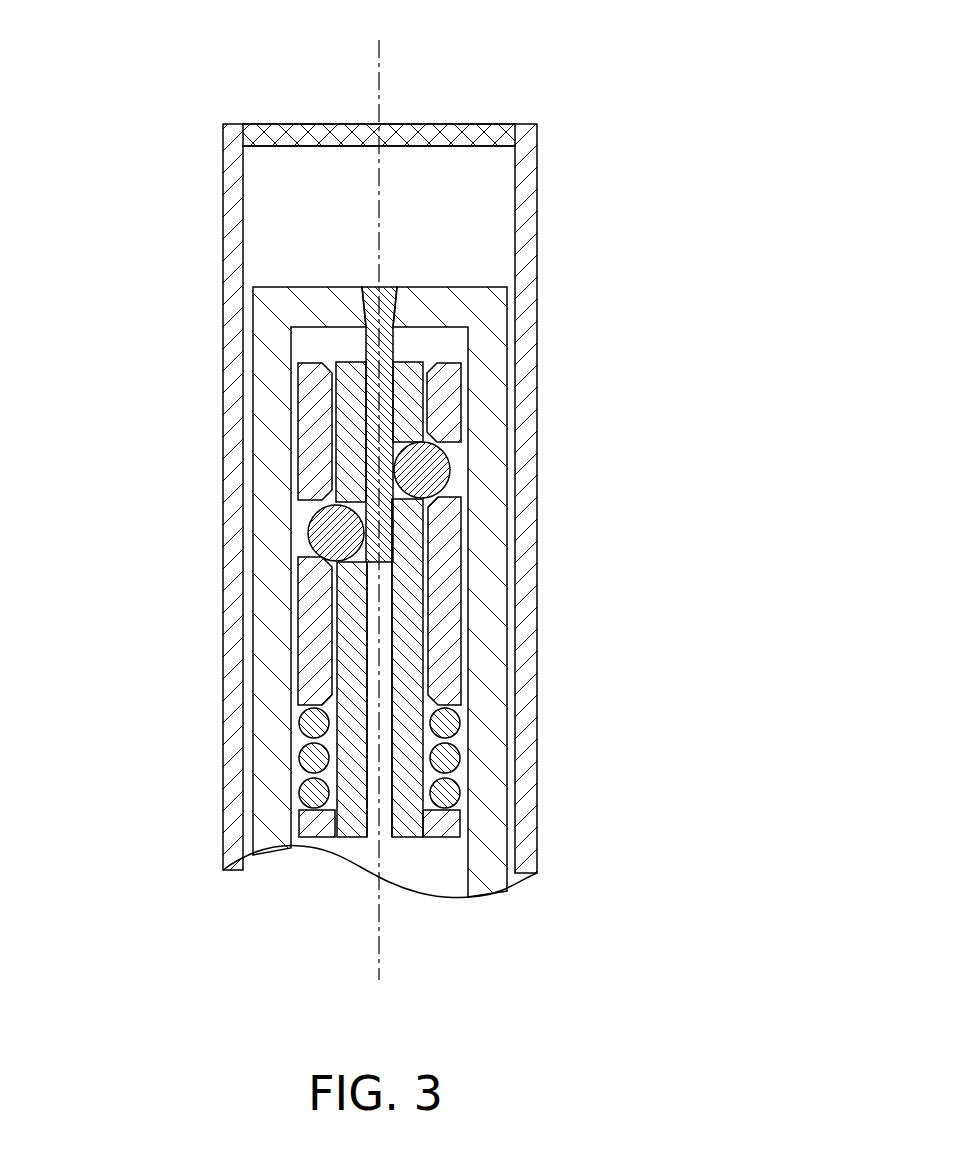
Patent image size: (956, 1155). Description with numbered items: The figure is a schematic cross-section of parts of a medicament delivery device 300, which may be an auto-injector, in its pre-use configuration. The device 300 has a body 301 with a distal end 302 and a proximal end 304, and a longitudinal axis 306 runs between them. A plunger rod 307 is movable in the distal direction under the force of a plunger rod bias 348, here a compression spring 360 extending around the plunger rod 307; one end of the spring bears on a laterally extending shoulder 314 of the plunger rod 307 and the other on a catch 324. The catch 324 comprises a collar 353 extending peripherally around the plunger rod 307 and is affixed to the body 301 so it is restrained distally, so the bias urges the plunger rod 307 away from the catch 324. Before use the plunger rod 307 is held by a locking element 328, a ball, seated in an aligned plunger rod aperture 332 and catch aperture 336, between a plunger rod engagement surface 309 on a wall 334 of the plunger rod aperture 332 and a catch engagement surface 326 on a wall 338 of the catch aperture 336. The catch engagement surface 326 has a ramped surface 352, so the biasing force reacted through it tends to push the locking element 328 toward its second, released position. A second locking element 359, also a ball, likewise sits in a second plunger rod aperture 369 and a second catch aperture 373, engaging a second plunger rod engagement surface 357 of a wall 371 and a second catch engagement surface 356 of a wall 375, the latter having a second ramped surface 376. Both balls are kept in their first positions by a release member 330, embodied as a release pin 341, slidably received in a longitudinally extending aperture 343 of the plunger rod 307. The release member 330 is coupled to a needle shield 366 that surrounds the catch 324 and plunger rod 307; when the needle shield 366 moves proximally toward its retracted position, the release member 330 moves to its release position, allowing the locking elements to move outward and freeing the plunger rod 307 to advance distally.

The medicament delivery device 300 is at (544, 46).
The body 301 is at (222, 162).
The distal end 302 is at (220, 908).
The proximal end 304 is at (383, 488).
The longitudinal axis 306 is at (378, 98).
The plunger rod 307 is at (381, 640).
The plunger rod engagement surface 309 is at (253, 437).
The shoulder 314 is at (323, 832).
The catch 324 is at (183, 647).
The catch engagement surface 326 is at (183, 647).
The locking element 328 is at (340, 563).
The release member 330 is at (247, 404).
The plunger rod aperture 332 is at (400, 505).
The wall 334 is at (405, 512).
The catch aperture 336 is at (308, 525).
The wall 338 is at (183, 647).
The release pin 341 is at (363, 342).
The longitudinally extending aperture 343 is at (446, 680).
The plunger rod bias 348 is at (276, 769).
The ramped surface 352 is at (183, 647).
The collar 353 is at (312, 572).
The second catch engagement surface 356 is at (547, 668).
The second plunger rod engagement surface 357 is at (524, 397).
The second locking element 359 is at (452, 472).
The compression spring 360 is at (298, 760).
The needle shield 366 is at (490, 765).
The second plunger rod aperture 369 is at (393, 448).
The wall 371 is at (408, 440).
The second catch aperture 373 is at (450, 450).
The wall 375 is at (547, 668).
The second ramped surface 376 is at (547, 668).